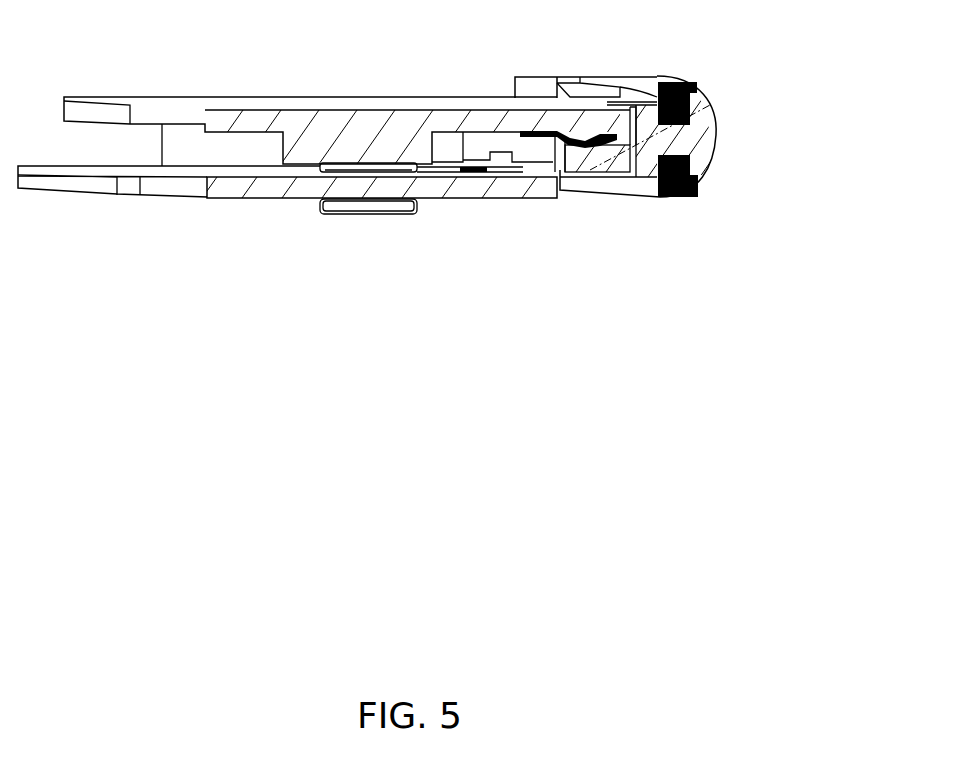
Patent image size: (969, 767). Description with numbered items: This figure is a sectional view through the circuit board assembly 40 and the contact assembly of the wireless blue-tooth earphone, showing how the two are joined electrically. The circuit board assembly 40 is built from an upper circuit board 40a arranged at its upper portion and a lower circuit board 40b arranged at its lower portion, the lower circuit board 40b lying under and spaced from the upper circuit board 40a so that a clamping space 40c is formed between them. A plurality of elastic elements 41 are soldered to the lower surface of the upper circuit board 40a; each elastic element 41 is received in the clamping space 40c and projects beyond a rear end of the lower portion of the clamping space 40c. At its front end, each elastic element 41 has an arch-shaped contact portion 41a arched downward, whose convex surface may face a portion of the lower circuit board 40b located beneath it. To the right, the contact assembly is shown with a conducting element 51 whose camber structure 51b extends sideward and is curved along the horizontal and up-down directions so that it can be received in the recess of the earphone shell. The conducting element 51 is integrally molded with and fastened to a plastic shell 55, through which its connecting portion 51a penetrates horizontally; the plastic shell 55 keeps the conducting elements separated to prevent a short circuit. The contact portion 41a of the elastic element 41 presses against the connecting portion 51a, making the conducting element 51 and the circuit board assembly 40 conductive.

The circuit board assembly 40 is at (254, 79).
The upper circuit board 40a is at (367, 120).
The lower circuit board 40b is at (230, 200).
The clamping space 40c is at (458, 153).
The elastic element 41 is at (554, 138).
The contact portion 41a is at (578, 143).
The conducting element 51 is at (721, 177).
The connecting portion 51a is at (603, 157).
The camber structure 51b is at (718, 143).
The plastic shell 55 is at (697, 86).